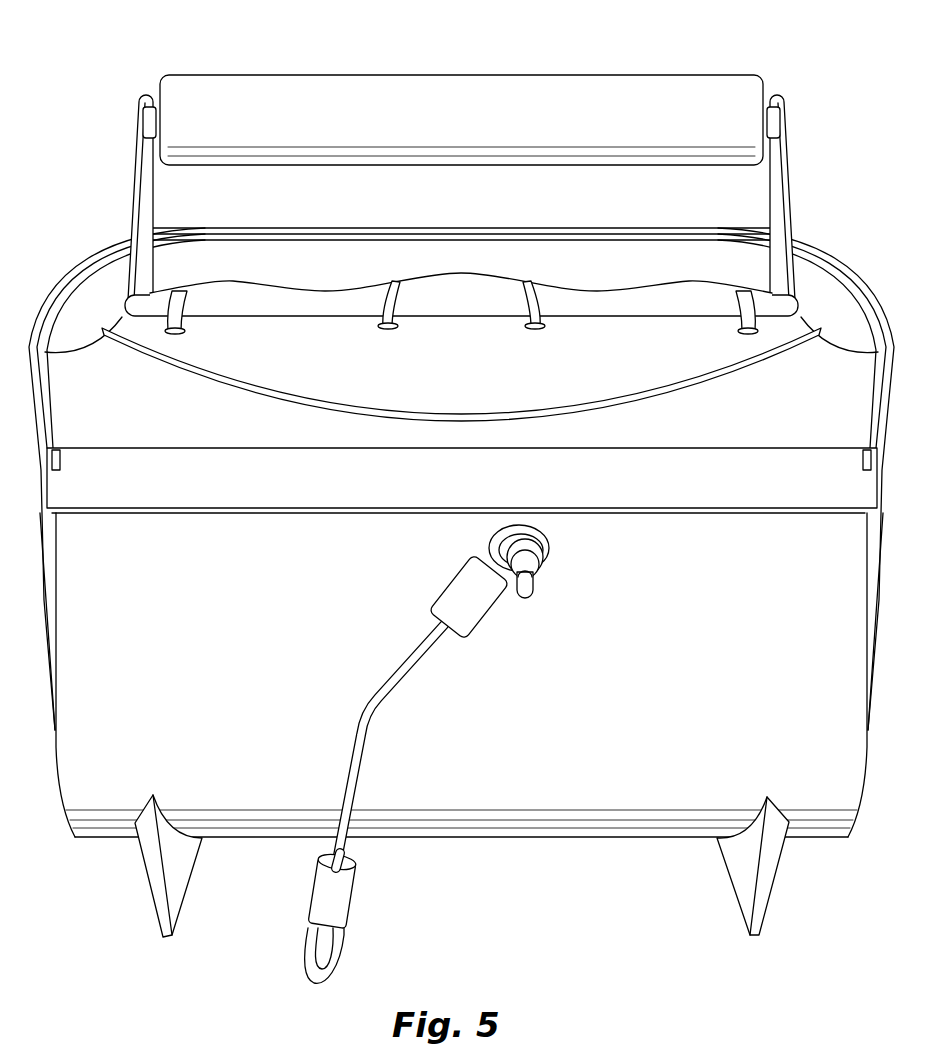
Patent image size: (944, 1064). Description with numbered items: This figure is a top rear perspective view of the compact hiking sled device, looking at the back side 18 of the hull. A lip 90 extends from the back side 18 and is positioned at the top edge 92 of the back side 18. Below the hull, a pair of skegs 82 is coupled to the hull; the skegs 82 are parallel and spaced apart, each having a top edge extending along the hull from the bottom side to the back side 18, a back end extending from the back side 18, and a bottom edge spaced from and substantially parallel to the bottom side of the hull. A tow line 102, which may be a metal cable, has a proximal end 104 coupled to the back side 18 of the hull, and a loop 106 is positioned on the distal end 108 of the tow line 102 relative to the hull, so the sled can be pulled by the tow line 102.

The back side 18 is at (620, 758).
The skegs 82 is at (177, 878).
The lip 90 is at (195, 490).
The top edge 92 is at (643, 448).
The tow line 102 is at (377, 703).
The proximal end 104 is at (492, 545).
The loop 106 is at (338, 942).
The distal end 108 is at (308, 967).